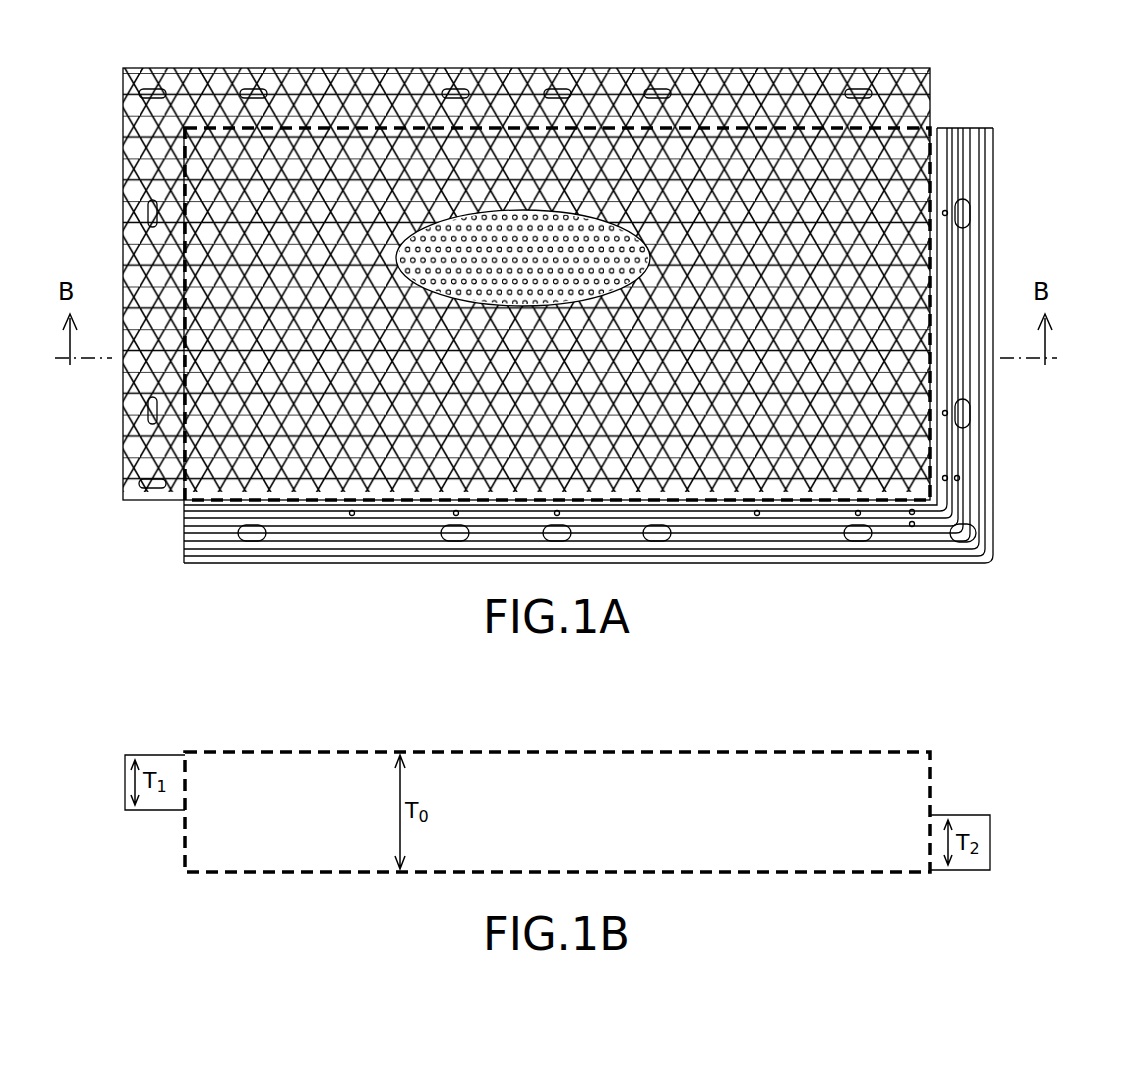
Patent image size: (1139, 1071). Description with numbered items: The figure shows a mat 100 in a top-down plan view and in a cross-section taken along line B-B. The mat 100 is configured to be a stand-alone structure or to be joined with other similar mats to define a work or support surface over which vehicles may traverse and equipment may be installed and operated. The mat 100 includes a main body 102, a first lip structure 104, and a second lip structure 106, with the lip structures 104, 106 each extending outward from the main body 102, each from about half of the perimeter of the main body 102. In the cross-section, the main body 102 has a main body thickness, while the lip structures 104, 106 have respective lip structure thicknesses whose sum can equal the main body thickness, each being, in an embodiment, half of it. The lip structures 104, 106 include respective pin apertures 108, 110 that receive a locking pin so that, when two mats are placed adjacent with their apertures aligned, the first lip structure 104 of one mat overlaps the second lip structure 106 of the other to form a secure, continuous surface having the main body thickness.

In FIG. 1A, the mat 100 is at (1030, 157).
In FIG. 1B, the mat 100 is at (967, 762).
In FIG. 1A, the main body 102 is at (905, 152).
In FIG. 1B, the main body 102 is at (670, 852).
In FIG. 1A, the first lip structure 104 is at (622, 86).
In FIG. 1B, the first lip structure 104 is at (128, 812).
In FIG. 1A, the second lip structure 106 is at (975, 480).
In FIG. 1B, the second lip structure 106 is at (975, 870).
In FIG. 1A, the pin apertures 108 is at (257, 95).
In FIG. 1A, the pin apertures 110 is at (660, 542).